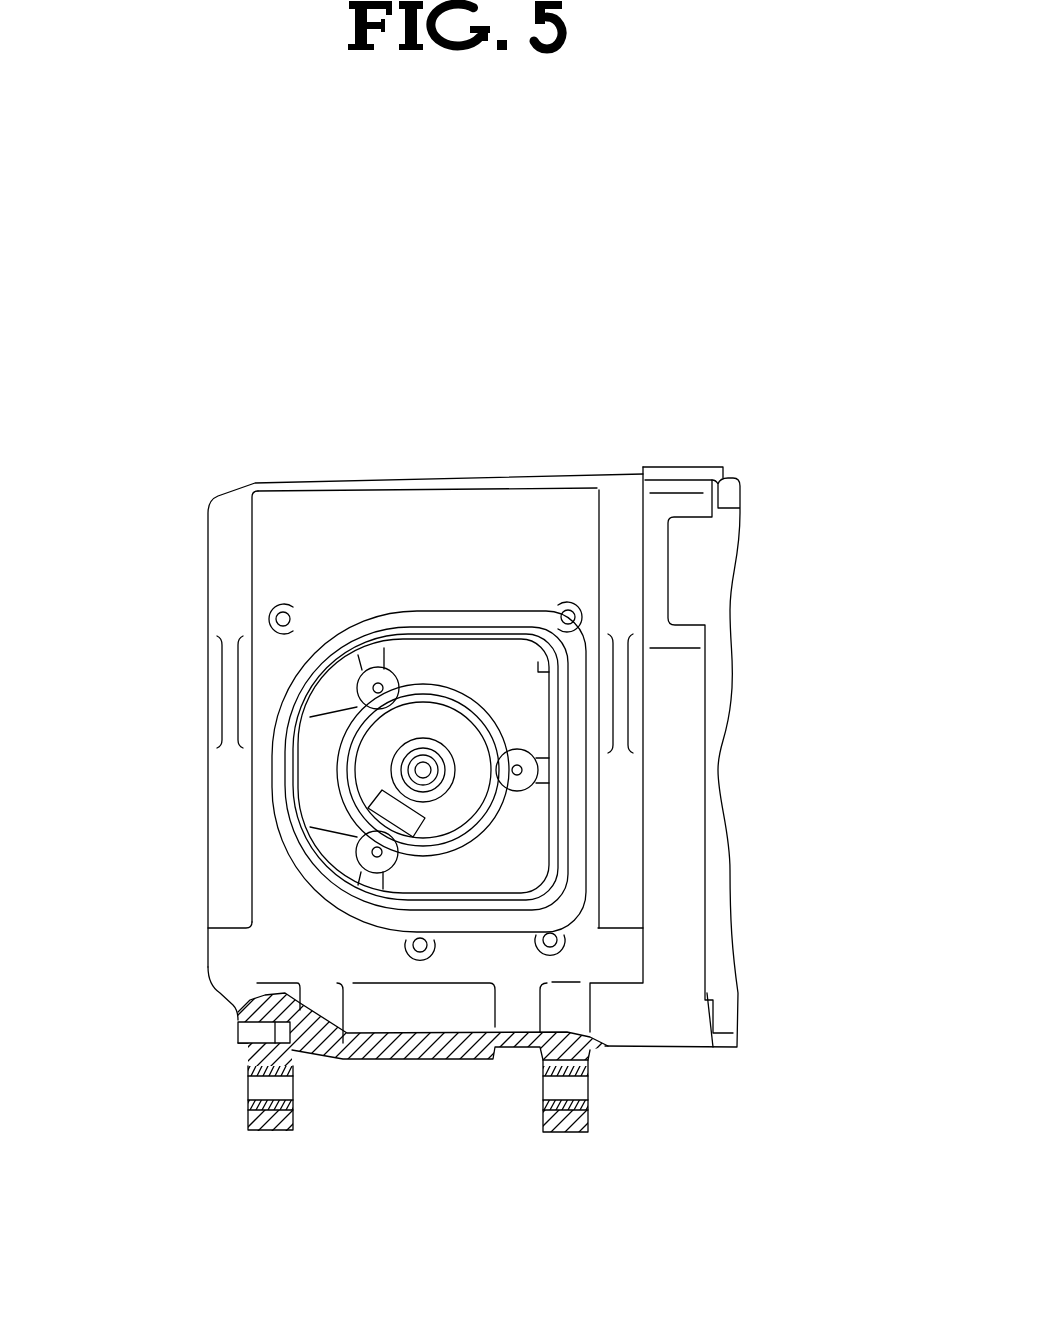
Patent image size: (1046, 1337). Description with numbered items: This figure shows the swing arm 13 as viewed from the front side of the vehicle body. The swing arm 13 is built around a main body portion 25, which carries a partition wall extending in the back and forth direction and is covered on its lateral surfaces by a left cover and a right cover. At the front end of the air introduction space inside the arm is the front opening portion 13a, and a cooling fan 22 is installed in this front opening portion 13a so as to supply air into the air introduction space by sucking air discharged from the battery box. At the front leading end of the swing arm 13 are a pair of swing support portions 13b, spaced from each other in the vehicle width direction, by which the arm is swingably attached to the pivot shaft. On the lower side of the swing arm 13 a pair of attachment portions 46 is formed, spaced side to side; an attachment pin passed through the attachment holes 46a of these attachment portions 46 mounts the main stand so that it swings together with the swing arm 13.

The swing arm 13 is at (509, 477).
The front opening portion 13a is at (552, 668).
The swing support portions 13b is at (227, 692).
The cooling fan 22 is at (463, 800).
The main body portion 25 is at (343, 523).
The attachment portions 46 is at (267, 1130).
The attachment holes 46a is at (260, 1100).